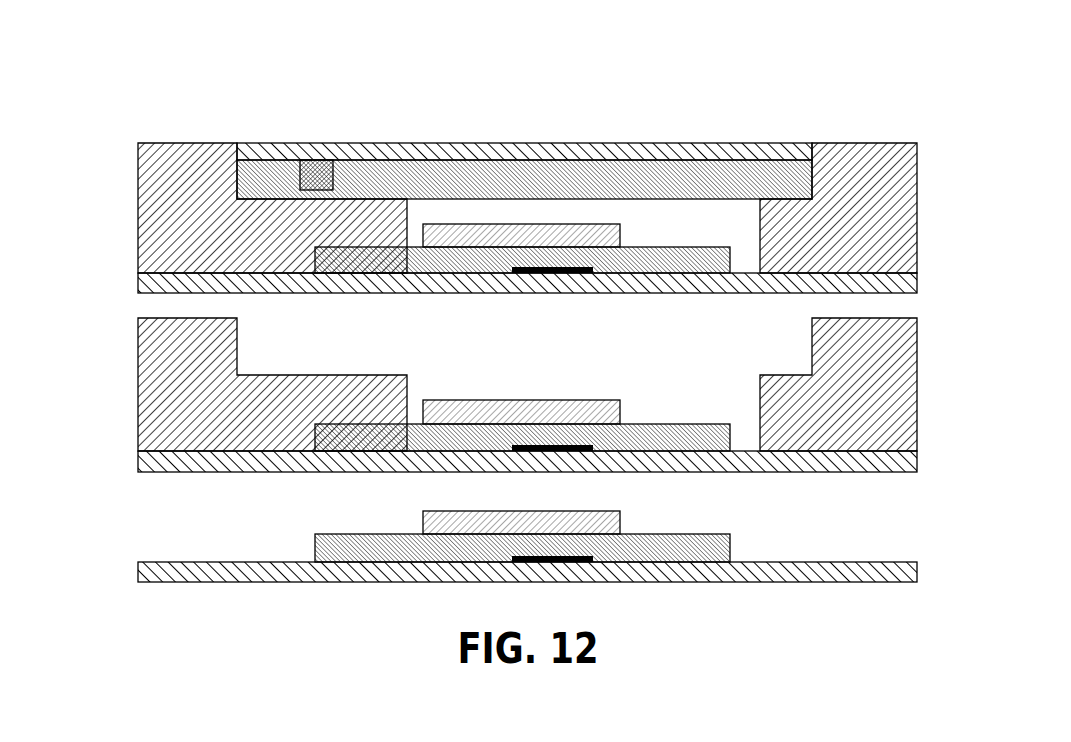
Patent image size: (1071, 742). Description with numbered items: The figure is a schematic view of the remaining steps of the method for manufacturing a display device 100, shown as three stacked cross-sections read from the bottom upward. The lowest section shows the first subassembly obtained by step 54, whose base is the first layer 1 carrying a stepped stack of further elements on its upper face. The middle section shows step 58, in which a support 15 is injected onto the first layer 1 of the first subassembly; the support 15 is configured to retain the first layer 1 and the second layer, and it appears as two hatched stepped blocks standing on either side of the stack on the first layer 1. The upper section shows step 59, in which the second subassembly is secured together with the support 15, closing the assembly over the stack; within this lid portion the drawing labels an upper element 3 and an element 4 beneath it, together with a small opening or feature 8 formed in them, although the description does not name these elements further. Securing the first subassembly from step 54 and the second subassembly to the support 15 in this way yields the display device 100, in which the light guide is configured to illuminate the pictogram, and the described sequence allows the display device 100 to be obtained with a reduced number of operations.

The display device 100 is at (483, 104).
The first layer 1 is at (838, 570).
The cover layer 3 is at (560, 151).
The lid adhesive layer 4 is at (697, 183).
The opening 8 is at (319, 172).
The support 15 is at (190, 373).
The step 54 is at (557, 579).
The step 58 is at (528, 395).
The step 59 is at (557, 179).